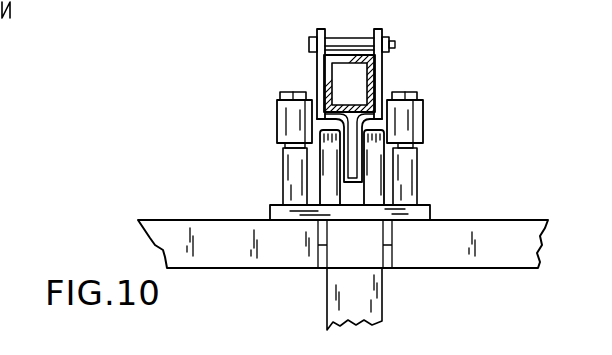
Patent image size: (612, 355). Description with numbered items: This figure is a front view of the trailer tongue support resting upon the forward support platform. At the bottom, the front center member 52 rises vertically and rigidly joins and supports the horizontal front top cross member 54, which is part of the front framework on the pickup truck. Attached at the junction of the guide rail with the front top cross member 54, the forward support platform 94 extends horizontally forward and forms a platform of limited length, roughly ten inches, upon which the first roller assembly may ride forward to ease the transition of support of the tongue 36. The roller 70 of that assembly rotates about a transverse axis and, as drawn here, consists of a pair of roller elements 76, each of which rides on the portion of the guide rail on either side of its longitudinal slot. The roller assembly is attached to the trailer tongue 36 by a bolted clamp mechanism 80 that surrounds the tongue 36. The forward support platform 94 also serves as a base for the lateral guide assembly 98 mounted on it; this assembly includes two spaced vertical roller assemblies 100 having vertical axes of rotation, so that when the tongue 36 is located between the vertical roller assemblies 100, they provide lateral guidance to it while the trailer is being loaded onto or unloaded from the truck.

The tongue 36 is at (340, 77).
The bolted clamp mechanism 80 is at (403, 108).
The lateral guide assembly 98 is at (431, 109).
The vertical roller assemblies 100 is at (293, 122).
The roller elements 76 is at (332, 167).
The roller 70 is at (316, 181).
The forward support platform 94 is at (287, 213).
The front top cross member 54 is at (502, 237).
The front center member 52 is at (380, 310).